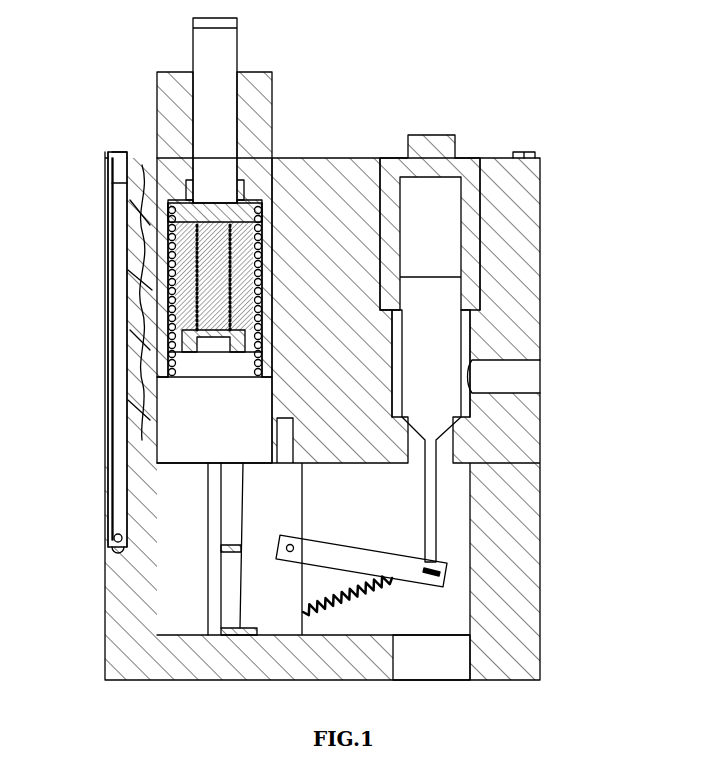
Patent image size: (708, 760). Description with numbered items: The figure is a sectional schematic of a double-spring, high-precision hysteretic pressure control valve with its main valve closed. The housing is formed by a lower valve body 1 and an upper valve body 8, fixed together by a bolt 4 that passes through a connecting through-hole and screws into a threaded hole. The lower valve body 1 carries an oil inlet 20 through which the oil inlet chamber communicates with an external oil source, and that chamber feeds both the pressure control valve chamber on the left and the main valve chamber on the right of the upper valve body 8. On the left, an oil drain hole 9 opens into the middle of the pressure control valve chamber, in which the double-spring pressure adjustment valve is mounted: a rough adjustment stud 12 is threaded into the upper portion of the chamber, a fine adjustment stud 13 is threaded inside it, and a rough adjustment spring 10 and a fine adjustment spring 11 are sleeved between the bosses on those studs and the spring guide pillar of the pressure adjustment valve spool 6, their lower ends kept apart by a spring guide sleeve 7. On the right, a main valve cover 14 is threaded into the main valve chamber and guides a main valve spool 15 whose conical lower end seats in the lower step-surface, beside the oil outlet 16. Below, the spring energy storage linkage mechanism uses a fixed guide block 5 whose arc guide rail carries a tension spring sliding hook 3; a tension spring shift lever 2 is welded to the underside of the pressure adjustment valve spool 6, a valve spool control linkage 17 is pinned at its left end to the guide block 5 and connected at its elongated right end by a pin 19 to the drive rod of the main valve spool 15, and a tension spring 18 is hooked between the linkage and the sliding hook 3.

The lower valve body 1 is at (130, 650).
The tension spring shift lever 2 is at (218, 635).
The tension spring sliding hook 3 is at (215, 627).
The bolt 4 is at (118, 545).
The guide block 5 is at (255, 492).
The pressure adjustment valve spool 6 is at (190, 415).
The spring guide sleeve 7 is at (175, 360).
The upper valve body 8 is at (170, 333).
The oil drain hole 9 is at (160, 300).
The rough adjustment spring 10 is at (160, 258).
The fine adjustment spring 11 is at (148, 243).
The rough adjustment stud 12 is at (120, 168).
The fine adjustment stud 13 is at (205, 135).
The main valve cover 14 is at (455, 158).
The main valve spool 15 is at (430, 372).
The oil outlet 16 is at (518, 378).
The valve spool control linkage 17 is at (325, 552).
The tension spring 18 is at (440, 570).
The pin 19 is at (400, 575).
The oil inlet 20 is at (430, 662).